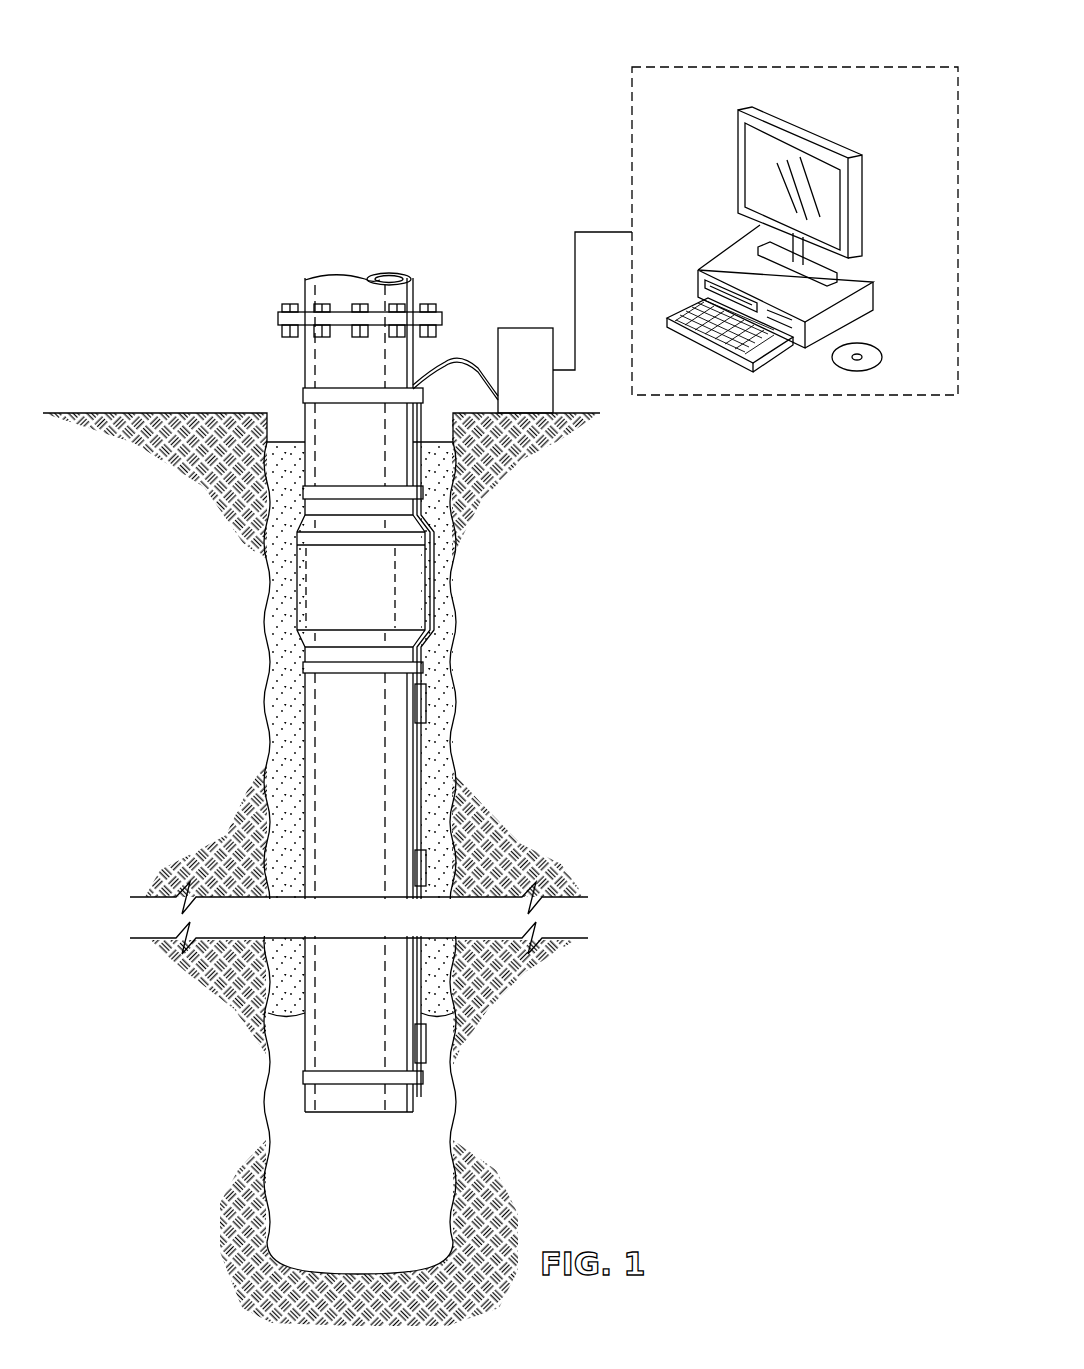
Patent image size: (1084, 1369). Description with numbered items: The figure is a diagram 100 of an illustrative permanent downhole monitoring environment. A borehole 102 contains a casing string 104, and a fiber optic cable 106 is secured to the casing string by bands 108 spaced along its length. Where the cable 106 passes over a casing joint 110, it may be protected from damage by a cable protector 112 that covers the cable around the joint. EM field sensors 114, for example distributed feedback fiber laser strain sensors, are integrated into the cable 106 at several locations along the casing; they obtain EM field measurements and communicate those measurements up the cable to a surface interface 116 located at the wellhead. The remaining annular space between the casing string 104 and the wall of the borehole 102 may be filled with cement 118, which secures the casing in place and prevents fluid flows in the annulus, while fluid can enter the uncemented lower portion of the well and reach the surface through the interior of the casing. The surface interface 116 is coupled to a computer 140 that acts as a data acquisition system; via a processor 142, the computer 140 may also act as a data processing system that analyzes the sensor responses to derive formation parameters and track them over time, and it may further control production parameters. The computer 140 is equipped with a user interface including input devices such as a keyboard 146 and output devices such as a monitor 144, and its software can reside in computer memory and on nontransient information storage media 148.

The diagram 100 is at (237, 217).
The borehole 102 is at (266, 694).
The casing string 104 is at (305, 372).
The fiber optic cable 106 is at (457, 360).
The bands 108 is at (350, 405).
The casing joint 110 is at (381, 602).
The cable protector 112 is at (430, 595).
The EM field sensors 114 is at (426, 706).
The surface interface 116 is at (531, 327).
The cement 118 is at (267, 602).
The computer 140 is at (795, 201).
The processor 142 is at (737, 265).
The monitor 144 is at (808, 128).
The keyboard 146 is at (688, 303).
The media 148 is at (883, 356).